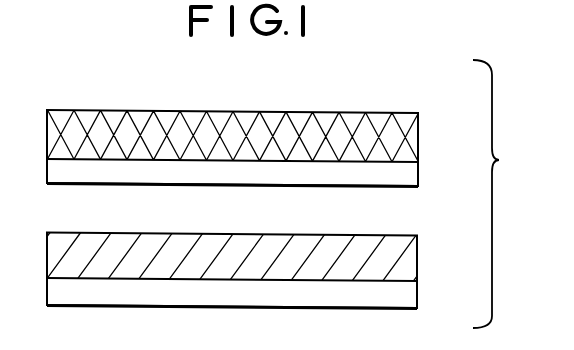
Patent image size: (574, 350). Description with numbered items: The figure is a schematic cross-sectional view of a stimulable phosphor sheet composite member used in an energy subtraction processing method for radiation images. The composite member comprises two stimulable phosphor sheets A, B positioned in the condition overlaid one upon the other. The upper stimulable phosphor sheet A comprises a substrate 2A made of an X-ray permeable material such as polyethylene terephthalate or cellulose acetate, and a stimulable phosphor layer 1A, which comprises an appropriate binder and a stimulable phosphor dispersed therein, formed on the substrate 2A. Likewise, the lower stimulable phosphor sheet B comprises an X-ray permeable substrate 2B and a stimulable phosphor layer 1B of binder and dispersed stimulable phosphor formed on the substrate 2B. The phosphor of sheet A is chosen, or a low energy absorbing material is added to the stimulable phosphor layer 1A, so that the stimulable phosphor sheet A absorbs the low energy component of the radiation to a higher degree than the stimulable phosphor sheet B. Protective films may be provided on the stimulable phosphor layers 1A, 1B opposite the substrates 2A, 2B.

The stimulable phosphor sheet A is at (261, 132).
The stimulable phosphor layer 1A is at (368, 121).
The substrate 2A is at (403, 177).
The stimulable phosphor sheet B is at (248, 251).
The stimulable phosphor layer 1B is at (367, 243).
The substrate 2B is at (408, 292).